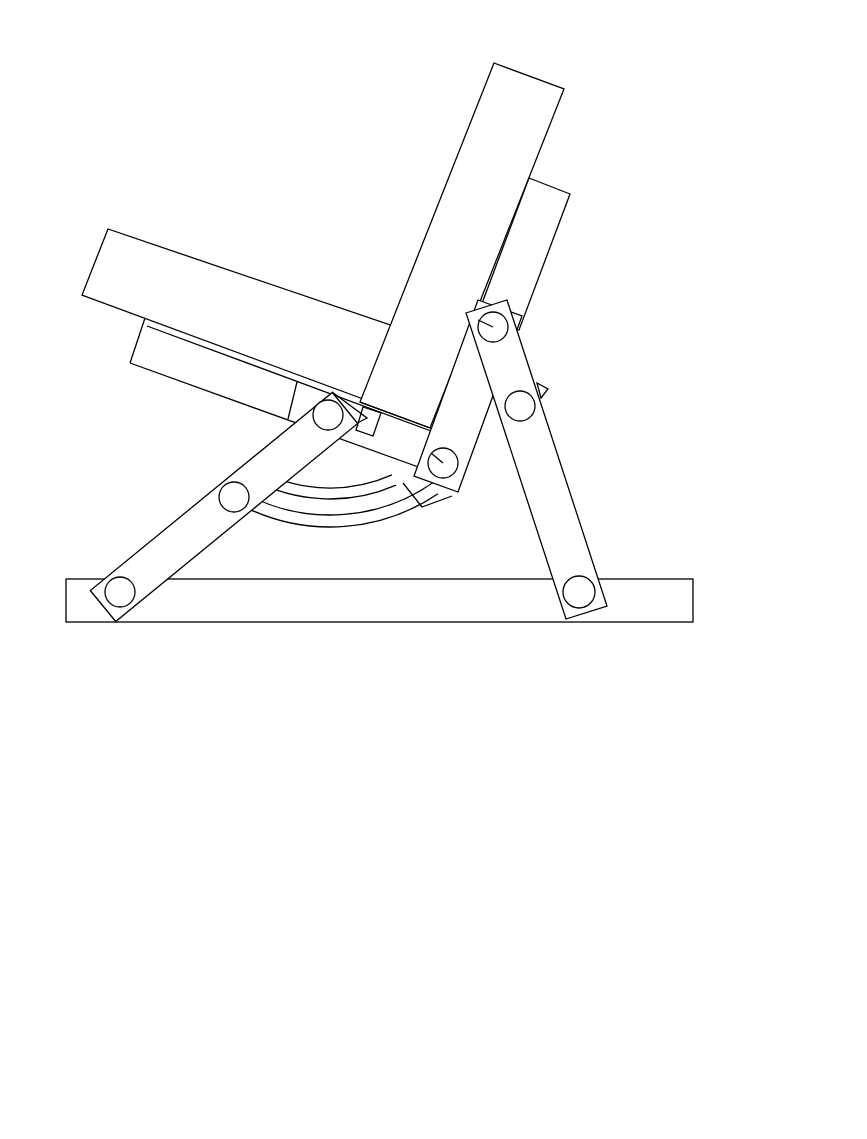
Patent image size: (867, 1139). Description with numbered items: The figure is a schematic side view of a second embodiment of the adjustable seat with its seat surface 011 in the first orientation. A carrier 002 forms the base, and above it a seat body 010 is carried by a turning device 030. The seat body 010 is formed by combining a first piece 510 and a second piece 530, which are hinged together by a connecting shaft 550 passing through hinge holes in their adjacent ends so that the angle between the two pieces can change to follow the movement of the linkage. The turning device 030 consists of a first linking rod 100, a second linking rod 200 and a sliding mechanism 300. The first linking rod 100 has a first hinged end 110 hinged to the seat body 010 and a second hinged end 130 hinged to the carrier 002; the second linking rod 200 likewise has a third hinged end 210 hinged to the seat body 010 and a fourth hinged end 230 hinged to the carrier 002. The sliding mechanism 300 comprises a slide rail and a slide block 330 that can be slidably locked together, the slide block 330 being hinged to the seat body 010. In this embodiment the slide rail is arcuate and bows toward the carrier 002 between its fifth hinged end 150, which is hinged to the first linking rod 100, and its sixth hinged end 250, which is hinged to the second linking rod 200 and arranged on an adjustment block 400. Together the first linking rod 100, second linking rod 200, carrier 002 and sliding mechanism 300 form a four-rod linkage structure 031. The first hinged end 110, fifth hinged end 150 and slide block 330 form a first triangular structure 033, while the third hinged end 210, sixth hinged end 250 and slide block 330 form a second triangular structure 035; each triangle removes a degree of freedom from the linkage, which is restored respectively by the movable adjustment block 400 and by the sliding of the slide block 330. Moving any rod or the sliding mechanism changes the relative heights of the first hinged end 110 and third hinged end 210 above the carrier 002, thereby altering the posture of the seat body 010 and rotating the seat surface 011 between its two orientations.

The seat body 010 is at (358, 200).
The seat surface 011 is at (196, 266).
The first hinged end 110 is at (328, 415).
The adjustment block 400 is at (335, 390).
The third hinged end 210 is at (467, 317).
The first piece 510 is at (542, 218).
The turning device 030 is at (646, 288).
The second triangular structure 035 is at (557, 351).
The second piece 530 is at (173, 358).
The first triangular structure 033 is at (212, 439).
The fifth hinged end 150 is at (234, 497).
The sixth hinged end 250 is at (520, 406).
The connecting shaft 550 is at (405, 493).
The slide block 330 is at (443, 492).
The second hinged end 130 is at (120, 592).
The first linking rod 100 is at (203, 528).
The sliding mechanism 300 is at (312, 505).
The carrier 002 is at (432, 605).
The second linking rod 200 is at (567, 555).
The fourth hinged end 230 is at (579, 592).
The four-rod linkage structure 031 is at (553, 705).